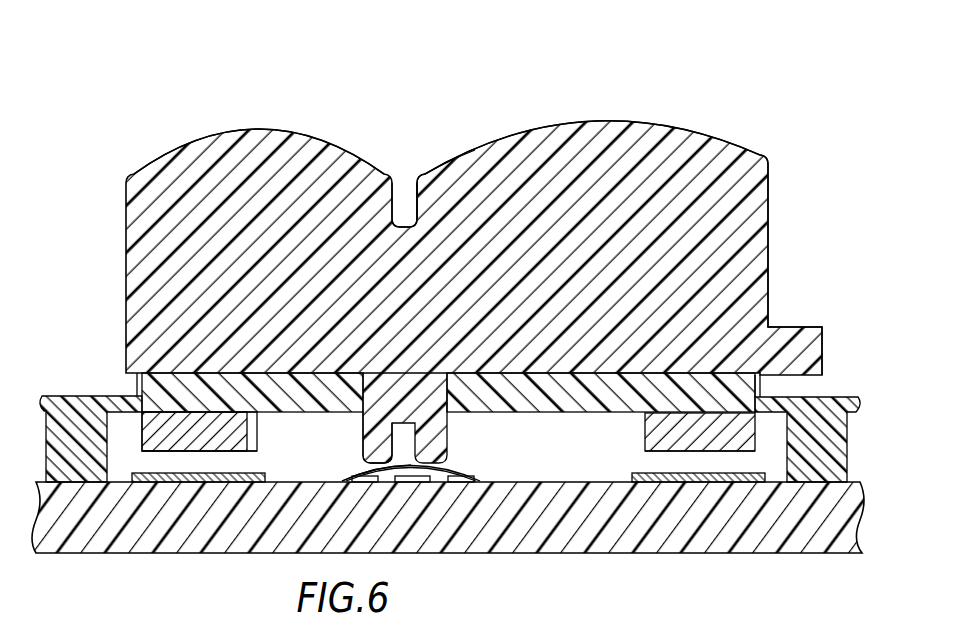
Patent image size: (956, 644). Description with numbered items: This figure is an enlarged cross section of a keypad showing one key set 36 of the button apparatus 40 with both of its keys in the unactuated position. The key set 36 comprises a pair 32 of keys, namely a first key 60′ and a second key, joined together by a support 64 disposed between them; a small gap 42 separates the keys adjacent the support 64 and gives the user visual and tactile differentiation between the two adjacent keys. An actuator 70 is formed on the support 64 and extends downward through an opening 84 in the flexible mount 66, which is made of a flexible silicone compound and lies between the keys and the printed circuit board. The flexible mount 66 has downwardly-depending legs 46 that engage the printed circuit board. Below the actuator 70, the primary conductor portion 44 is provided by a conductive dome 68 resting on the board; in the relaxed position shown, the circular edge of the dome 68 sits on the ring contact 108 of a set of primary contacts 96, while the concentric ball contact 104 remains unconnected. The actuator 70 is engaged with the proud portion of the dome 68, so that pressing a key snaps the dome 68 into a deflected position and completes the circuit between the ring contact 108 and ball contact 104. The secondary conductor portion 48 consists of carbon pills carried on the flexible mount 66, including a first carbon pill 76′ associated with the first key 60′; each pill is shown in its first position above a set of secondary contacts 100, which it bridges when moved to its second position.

The key set 36 is at (449, 123).
The pair of keys 32 is at (433, 152).
The gap 42 is at (403, 185).
The first key 60′ is at (256, 128).
The button apparatus 40 is at (778, 166).
The flexible mount 66 is at (51, 395).
The support 64 is at (387, 337).
The opening 84 is at (366, 415).
The actuator 70 is at (452, 430).
The leg 46 is at (140, 455).
The first carbon pill 76′ is at (227, 459).
The secondary conductor portion 48 is at (645, 430).
The primary conductor portion 44 is at (462, 473).
The conductive dome 68 is at (368, 471).
The set of primary contacts 96 is at (433, 490).
The set of secondary contacts 100 is at (167, 490).
The ring contact 108 is at (312, 482).
The ball contact 104 is at (380, 484).